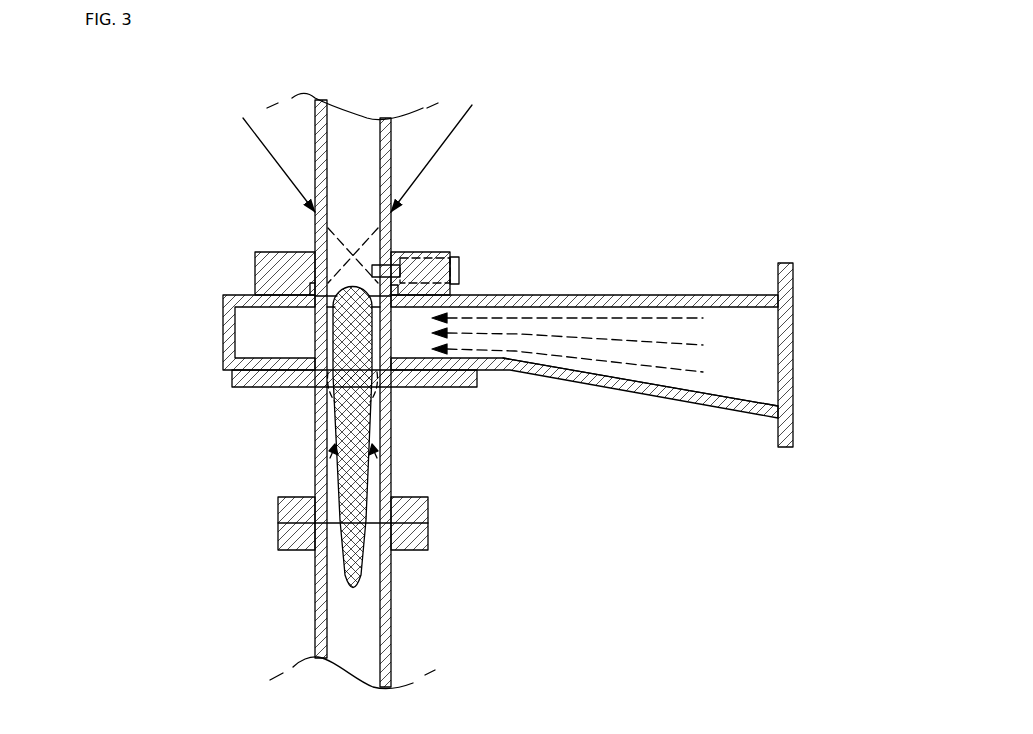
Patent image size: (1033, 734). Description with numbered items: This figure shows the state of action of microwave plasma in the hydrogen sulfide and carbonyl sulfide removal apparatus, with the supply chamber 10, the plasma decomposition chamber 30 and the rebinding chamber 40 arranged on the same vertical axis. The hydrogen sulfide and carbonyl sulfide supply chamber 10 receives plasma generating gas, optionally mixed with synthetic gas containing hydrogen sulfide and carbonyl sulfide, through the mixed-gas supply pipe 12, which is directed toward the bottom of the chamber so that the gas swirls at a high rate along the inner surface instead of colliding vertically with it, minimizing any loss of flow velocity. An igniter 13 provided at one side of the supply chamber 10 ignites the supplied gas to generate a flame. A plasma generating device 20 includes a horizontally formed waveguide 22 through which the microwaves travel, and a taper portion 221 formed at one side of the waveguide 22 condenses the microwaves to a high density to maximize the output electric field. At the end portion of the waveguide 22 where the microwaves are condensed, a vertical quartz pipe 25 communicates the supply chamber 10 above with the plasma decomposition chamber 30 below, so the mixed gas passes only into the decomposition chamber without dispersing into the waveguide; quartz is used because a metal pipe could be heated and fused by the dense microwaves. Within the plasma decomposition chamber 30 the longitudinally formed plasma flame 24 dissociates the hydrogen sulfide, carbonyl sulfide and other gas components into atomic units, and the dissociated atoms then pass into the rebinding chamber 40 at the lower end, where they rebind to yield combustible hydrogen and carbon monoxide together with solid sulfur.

The hydrogen sulfide and carbonyl sulfide supply chamber 10 is at (355, 366).
The mixed-gas supply pipe 12 is at (246, 133).
The igniter 13 is at (459, 270).
The plasma generating device 20 is at (554, 354).
The waveguide 22 is at (537, 373).
The taper portion 221 is at (617, 376).
The plasma flame 24 is at (360, 393).
The quartz pipe 25 is at (323, 335).
The plasma decomposition chamber 30 is at (392, 453).
The rebinding chamber 40 is at (388, 590).